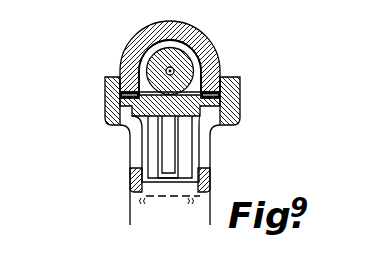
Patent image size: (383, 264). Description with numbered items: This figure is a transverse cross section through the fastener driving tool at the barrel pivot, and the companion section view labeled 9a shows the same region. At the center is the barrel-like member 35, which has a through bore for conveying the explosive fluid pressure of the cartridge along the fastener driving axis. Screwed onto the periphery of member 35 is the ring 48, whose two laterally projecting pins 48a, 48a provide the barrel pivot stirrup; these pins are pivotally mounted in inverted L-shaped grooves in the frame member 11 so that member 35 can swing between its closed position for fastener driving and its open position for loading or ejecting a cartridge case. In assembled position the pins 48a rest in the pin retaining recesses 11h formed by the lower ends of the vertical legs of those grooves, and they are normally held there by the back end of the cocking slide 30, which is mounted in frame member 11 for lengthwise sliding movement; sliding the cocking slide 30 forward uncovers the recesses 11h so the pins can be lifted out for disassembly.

The member 35 is at (202, 40).
The ring 48 is at (215, 42).
The frame member 11 is at (221, 70).
The cocking slide 30 is at (124, 66).
The pin retaining recesses 11h is at (119, 94).
The pins 48a is at (106, 108).
The section line 9a is at (123, 66).